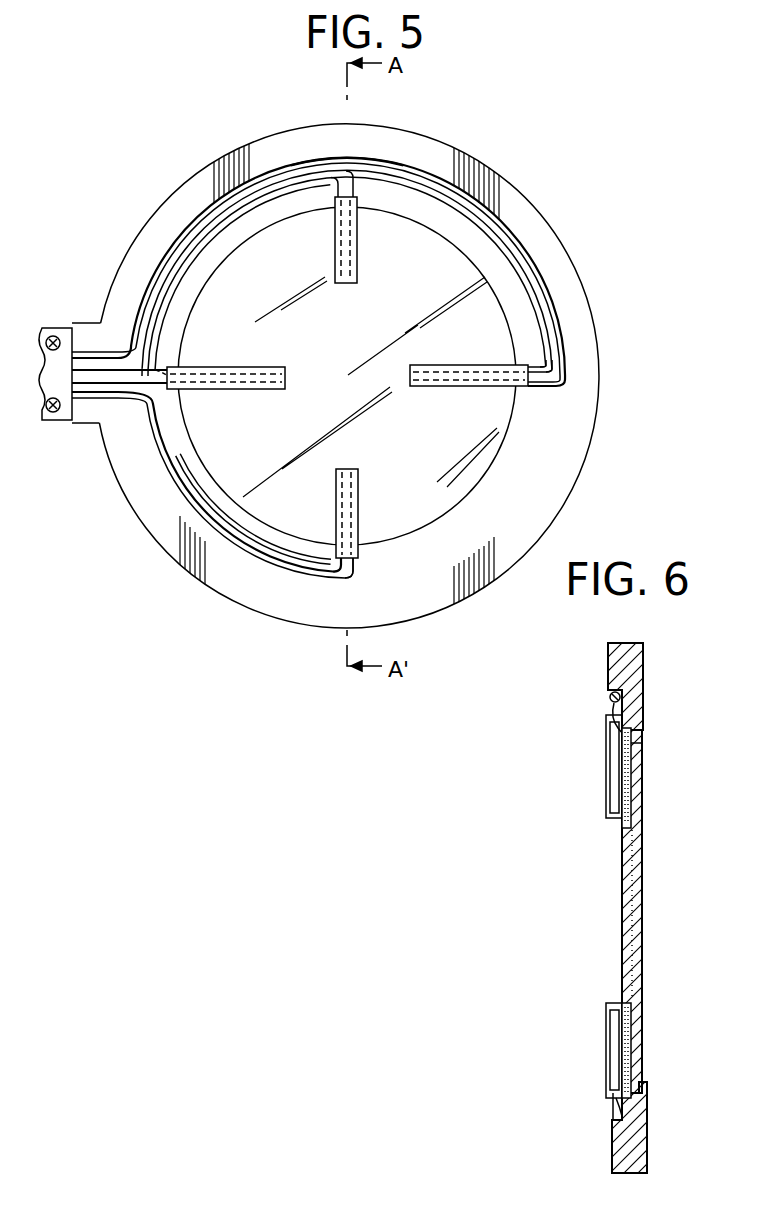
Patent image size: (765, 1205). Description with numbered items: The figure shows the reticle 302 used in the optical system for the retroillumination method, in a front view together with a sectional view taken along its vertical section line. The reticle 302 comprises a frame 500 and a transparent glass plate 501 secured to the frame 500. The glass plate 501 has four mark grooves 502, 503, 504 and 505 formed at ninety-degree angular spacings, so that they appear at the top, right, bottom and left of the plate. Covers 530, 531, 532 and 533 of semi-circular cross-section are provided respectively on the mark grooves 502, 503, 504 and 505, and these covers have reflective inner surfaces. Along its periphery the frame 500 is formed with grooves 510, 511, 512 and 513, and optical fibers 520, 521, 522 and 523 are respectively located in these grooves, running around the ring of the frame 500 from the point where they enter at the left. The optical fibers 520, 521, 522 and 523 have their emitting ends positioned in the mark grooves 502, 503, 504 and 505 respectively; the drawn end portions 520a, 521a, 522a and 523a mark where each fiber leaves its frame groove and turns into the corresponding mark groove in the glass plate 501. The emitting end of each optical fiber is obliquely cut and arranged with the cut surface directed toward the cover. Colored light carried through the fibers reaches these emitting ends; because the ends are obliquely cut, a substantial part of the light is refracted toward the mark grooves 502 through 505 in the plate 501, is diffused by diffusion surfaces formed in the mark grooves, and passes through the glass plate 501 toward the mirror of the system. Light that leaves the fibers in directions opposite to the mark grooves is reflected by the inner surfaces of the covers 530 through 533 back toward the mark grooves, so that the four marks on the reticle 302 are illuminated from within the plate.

In FIG. 5, the reticle 302 is at (522, 185).
In FIG. 5, the frame 500 is at (555, 245).
In FIG. 6, the frame 500 is at (643, 651).
In FIG. 5, the transparent glass plate 501 is at (497, 338).
In FIG. 6, the transparent glass plate 501 is at (641, 913).
In FIG. 5, the mark groove 502 is at (352, 253).
In FIG. 6, the mark groove 502 is at (628, 792).
In FIG. 5, the mark groove 503 is at (476, 386).
In FIG. 5, the mark groove 504 is at (357, 506).
In FIG. 6, the mark groove 504 is at (634, 1020).
In FIG. 5, the mark groove 505 is at (268, 366).
In FIG. 5, the groove 510 is at (350, 578).
In FIG. 5, the groove 511 is at (186, 389).
In FIG. 5, the groove 512 is at (233, 240).
In FIG. 5, the groove 513 is at (372, 156).
In FIG. 5, the optical fiber 520 is at (183, 348).
In FIG. 5, the left lead connection 520a is at (190, 358).
In FIG. 5, the optical fiber 521 is at (290, 565).
In FIG. 6, the optical fiber 521 is at (612, 1113).
In FIG. 5, the lower lead branch 521a is at (335, 545).
In FIG. 6, the lower lead branch 521a is at (610, 1082).
In FIG. 5, the optical fiber 522 is at (200, 252).
In FIG. 6, the optical fiber 522 is at (620, 716).
In FIG. 5, the upper lead bend 522a is at (345, 203).
In FIG. 6, the upper lead bend 522a is at (642, 750).
In FIG. 5, the optical fiber 523 is at (455, 190).
In FIG. 5, the right lead bend 523a is at (516, 380).
In FIG. 5, the cover 530 is at (358, 273).
In FIG. 6, the cover 530 is at (605, 762).
In FIG. 5, the cover 531 is at (455, 364).
In FIG. 5, the cover 532 is at (359, 486).
In FIG. 6, the cover 532 is at (605, 1020).
In FIG. 5, the cover 533 is at (261, 390).